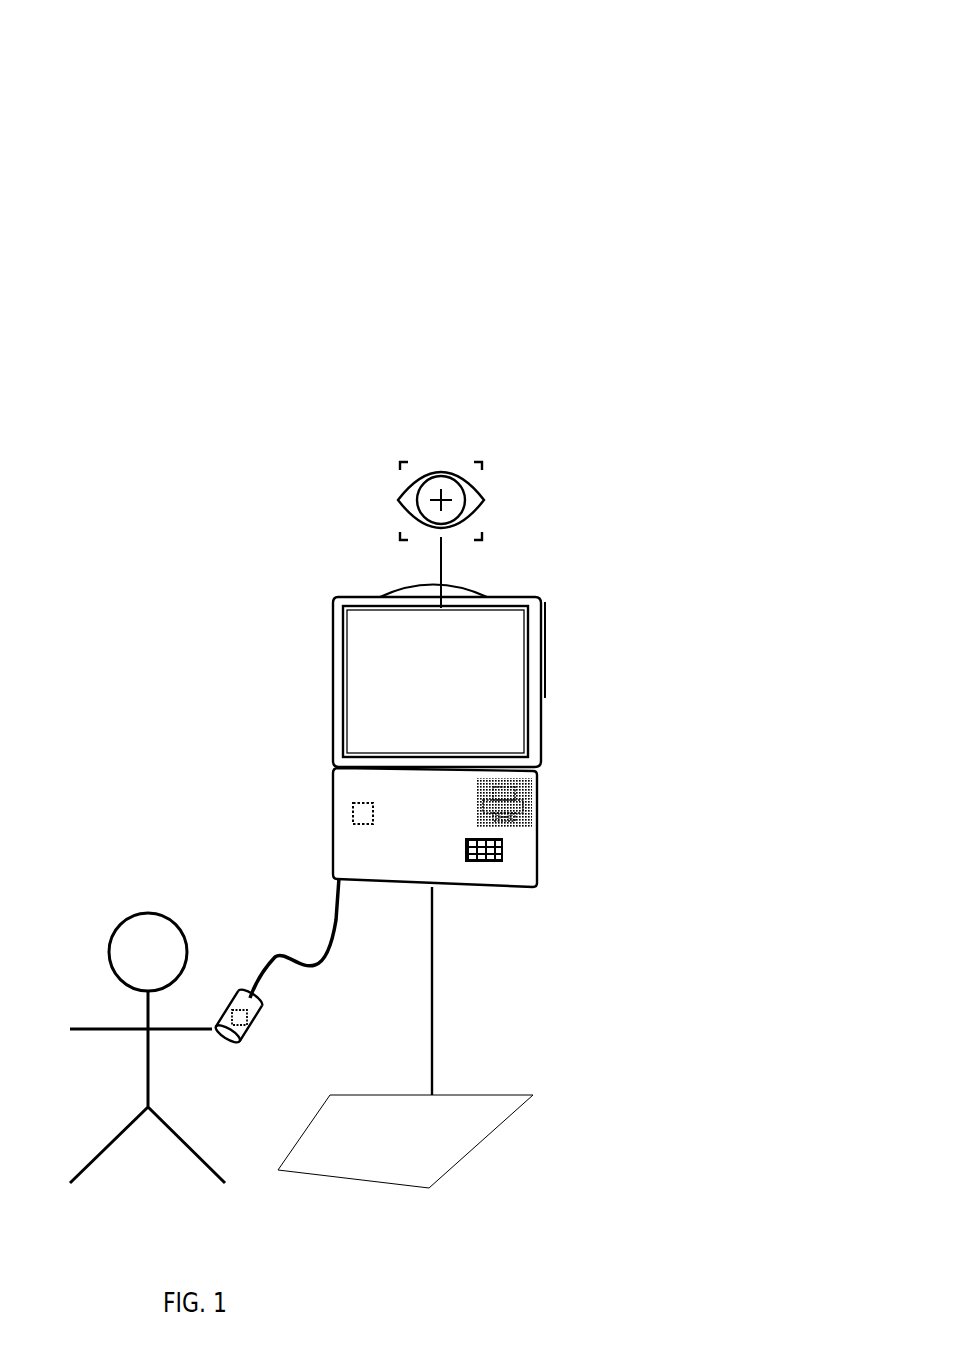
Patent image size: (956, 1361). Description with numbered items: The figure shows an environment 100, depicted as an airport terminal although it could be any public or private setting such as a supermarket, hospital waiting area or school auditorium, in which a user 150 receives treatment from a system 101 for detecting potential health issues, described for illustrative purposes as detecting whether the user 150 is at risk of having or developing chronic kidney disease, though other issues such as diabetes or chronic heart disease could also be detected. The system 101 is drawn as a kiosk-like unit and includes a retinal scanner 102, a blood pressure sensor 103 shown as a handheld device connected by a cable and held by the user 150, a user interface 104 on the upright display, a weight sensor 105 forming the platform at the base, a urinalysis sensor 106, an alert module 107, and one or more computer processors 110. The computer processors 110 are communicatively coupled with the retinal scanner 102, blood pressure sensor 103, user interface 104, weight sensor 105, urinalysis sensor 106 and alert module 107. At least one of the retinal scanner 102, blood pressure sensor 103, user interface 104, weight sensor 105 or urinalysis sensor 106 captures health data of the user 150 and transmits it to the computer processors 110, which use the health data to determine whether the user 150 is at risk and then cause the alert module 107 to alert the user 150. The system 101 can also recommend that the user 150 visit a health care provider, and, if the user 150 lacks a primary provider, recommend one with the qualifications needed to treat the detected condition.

The environment 100 is at (555, 95).
The system 101 is at (505, 570).
The retinal scanner 102 is at (470, 445).
The blood pressure sensor 103 is at (258, 920).
The user interface 104 is at (497, 687).
The weight sensor 105 is at (472, 1142).
The urinalysis sensor 106 is at (505, 853).
The alert module 107 is at (525, 788).
The computer processors 110 is at (375, 801).
The user 150 is at (152, 843).